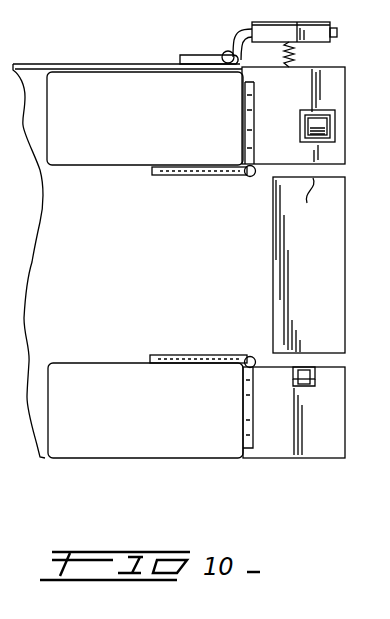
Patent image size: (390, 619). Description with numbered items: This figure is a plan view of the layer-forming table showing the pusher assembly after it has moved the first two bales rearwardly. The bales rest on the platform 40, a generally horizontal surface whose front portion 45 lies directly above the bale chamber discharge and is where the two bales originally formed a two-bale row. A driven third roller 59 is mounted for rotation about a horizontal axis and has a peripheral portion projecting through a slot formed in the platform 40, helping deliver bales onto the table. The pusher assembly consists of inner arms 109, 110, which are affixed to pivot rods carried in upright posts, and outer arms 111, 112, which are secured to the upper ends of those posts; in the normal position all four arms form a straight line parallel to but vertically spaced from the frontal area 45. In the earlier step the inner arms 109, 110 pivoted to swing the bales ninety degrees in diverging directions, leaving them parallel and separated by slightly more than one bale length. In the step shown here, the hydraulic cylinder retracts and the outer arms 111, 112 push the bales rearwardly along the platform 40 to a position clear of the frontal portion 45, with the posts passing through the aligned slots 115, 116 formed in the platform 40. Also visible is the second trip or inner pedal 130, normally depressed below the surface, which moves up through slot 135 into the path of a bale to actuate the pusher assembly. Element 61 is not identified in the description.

The platform 40 is at (141, 288).
The front portion of the platform 45 is at (322, 267).
The third roller 59 is at (333, 137).
The switch element 61 is at (333, 120).
The inner arm 109 is at (193, 355).
The inner arm 110 is at (196, 176).
The outer arm 111 is at (249, 408).
The outer arm 112 is at (248, 123).
The slot 115 is at (314, 201).
The slot 116 is at (304, 353).
The second trip (inner pedal) 130 is at (315, 383).
The slot 135 is at (313, 367).